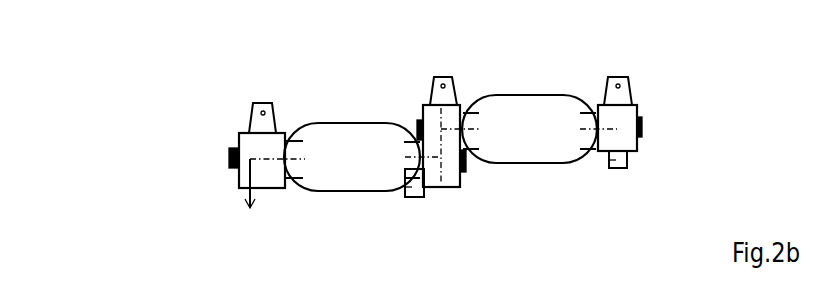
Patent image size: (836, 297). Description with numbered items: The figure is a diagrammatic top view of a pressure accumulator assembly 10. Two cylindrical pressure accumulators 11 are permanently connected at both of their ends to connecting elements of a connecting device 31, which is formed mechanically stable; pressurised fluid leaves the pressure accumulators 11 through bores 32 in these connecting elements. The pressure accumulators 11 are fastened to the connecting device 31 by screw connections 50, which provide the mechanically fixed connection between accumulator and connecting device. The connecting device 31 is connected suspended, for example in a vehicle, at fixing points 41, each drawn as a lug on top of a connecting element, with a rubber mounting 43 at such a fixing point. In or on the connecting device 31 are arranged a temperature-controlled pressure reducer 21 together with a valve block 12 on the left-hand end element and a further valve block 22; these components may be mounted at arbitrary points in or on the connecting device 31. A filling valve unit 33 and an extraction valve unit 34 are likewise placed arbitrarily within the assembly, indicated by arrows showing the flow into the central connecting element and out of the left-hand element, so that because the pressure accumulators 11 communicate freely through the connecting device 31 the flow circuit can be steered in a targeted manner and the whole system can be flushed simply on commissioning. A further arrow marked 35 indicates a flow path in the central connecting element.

The pressure accumulator assembly 10 is at (150, 37).
The pressure accumulator 11 is at (440, 143).
The valve block 12 is at (238, 182).
The pressure reducer 21 is at (248, 132).
The valve block 22 is at (404, 186).
The connecting device 31 is at (639, 105).
The bore 32 is at (618, 133).
The filling valve unit 33 is at (441, 132).
The extraction valve unit 34 is at (245, 208).
The lower passage 35 is at (443, 163).
The fixing point, suspended design 41 is at (265, 103).
The rubber mounting 43 is at (614, 81).
The screw connection 50 is at (229, 159).